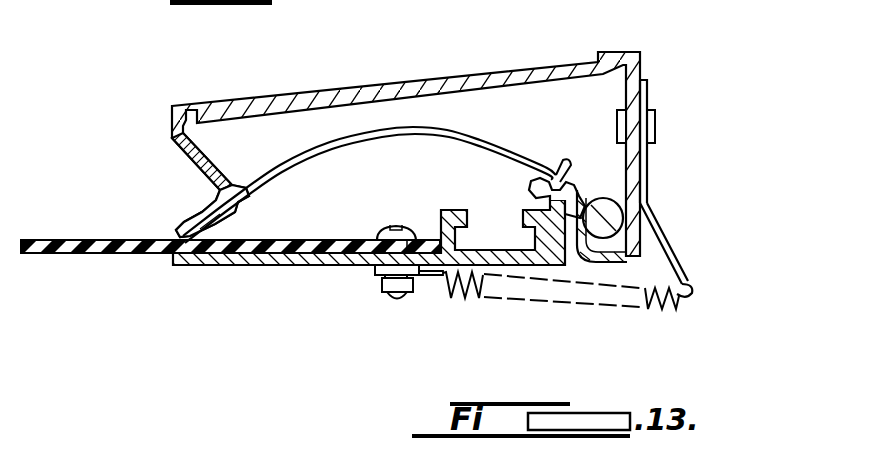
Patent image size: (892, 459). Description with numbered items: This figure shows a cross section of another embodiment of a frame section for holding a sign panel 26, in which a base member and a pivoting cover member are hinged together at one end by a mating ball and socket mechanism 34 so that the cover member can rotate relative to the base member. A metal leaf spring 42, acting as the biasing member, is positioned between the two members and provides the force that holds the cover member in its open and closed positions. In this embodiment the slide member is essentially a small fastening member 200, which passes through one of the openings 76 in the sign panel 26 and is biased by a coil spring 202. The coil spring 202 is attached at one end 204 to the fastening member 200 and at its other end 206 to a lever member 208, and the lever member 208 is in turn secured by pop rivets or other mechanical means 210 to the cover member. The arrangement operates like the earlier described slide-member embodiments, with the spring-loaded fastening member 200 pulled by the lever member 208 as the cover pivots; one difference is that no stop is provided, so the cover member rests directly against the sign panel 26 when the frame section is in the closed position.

The leaf spring 42 is at (507, 147).
The ball and socket mechanism 34 is at (590, 178).
The fastening member 200 is at (387, 228).
The openings 76 is at (370, 237).
The sign panel 26 is at (62, 242).
The one end of coil spring 204 is at (433, 272).
The coil spring 202 is at (643, 310).
The other end of coil spring 206 is at (697, 285).
The lever member 208 is at (667, 240).
The pop rivets or mechanical means 210 is at (656, 120).